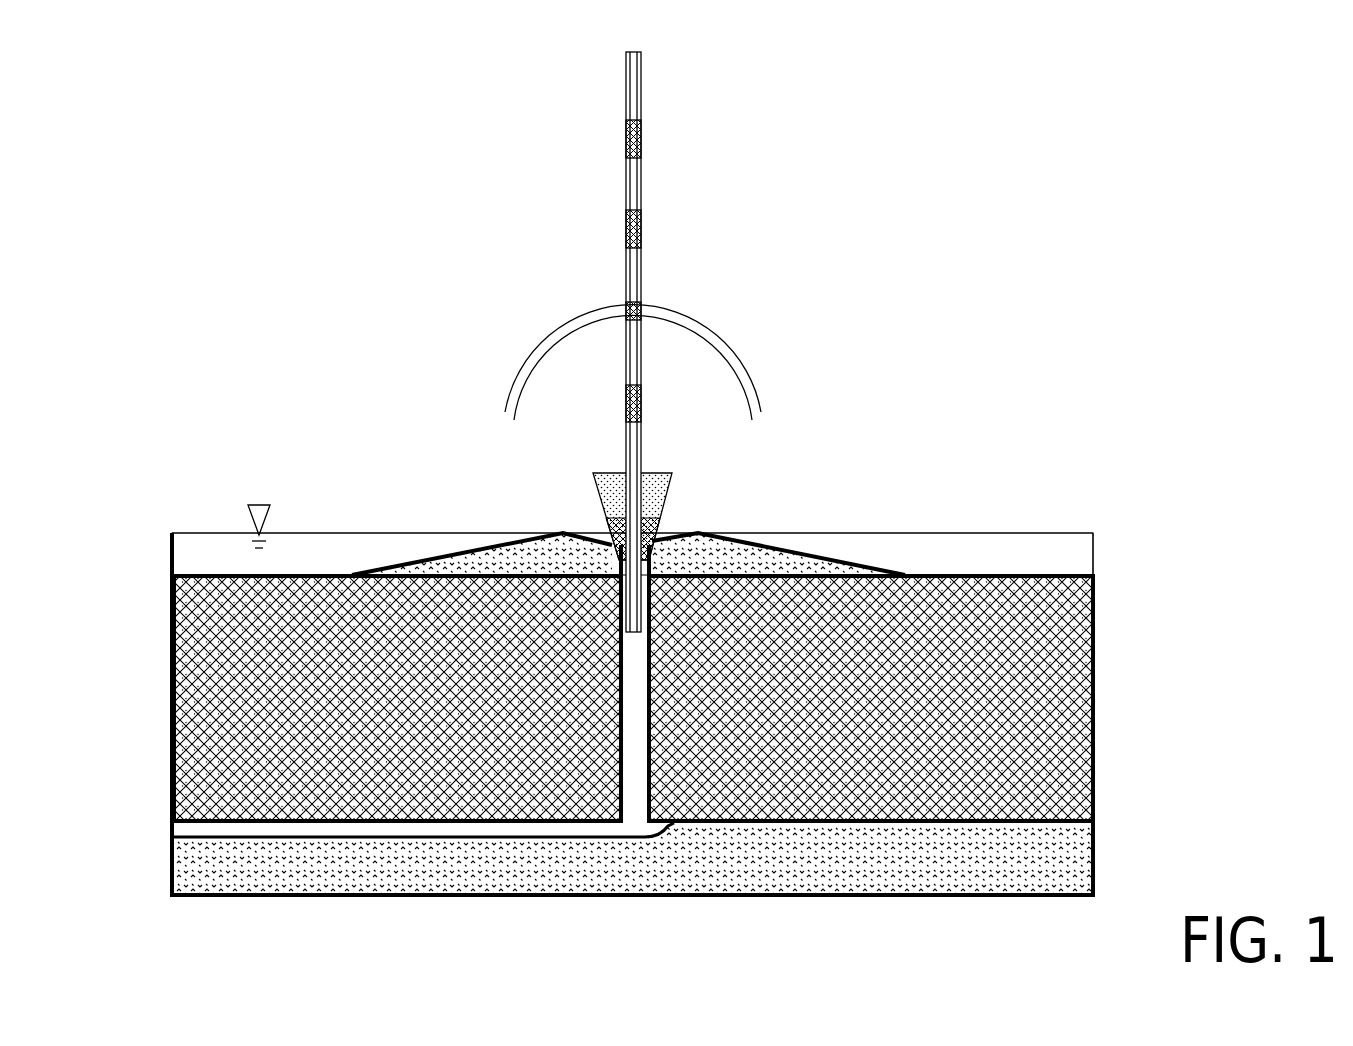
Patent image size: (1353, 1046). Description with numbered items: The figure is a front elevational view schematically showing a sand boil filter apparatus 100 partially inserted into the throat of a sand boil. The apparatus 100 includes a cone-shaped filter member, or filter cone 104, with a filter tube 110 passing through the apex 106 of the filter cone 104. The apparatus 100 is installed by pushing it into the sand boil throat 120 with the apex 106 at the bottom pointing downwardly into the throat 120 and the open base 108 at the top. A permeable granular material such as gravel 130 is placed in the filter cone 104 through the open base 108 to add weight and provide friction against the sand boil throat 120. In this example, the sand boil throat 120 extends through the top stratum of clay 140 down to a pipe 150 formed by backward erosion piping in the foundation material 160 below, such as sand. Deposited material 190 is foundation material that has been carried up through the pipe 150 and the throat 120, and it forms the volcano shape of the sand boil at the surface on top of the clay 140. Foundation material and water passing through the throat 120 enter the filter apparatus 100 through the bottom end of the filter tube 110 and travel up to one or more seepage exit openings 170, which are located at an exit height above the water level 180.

The sand boil filter apparatus 100 is at (315, 168).
The filter tube 110 is at (642, 90).
The seepage exit openings 170 is at (641, 302).
The filter cone 104 is at (603, 508).
The open base 108 is at (663, 460).
The gravel 130 is at (660, 526).
The apex 106 is at (613, 600).
The deposited material 190 is at (772, 558).
The water level 180 is at (967, 528).
The top stratum (clay) 140 is at (1077, 692).
The foundation material 160 is at (1075, 858).
The pipe 150 is at (172, 828).
The sand boil throat 120 is at (650, 747).